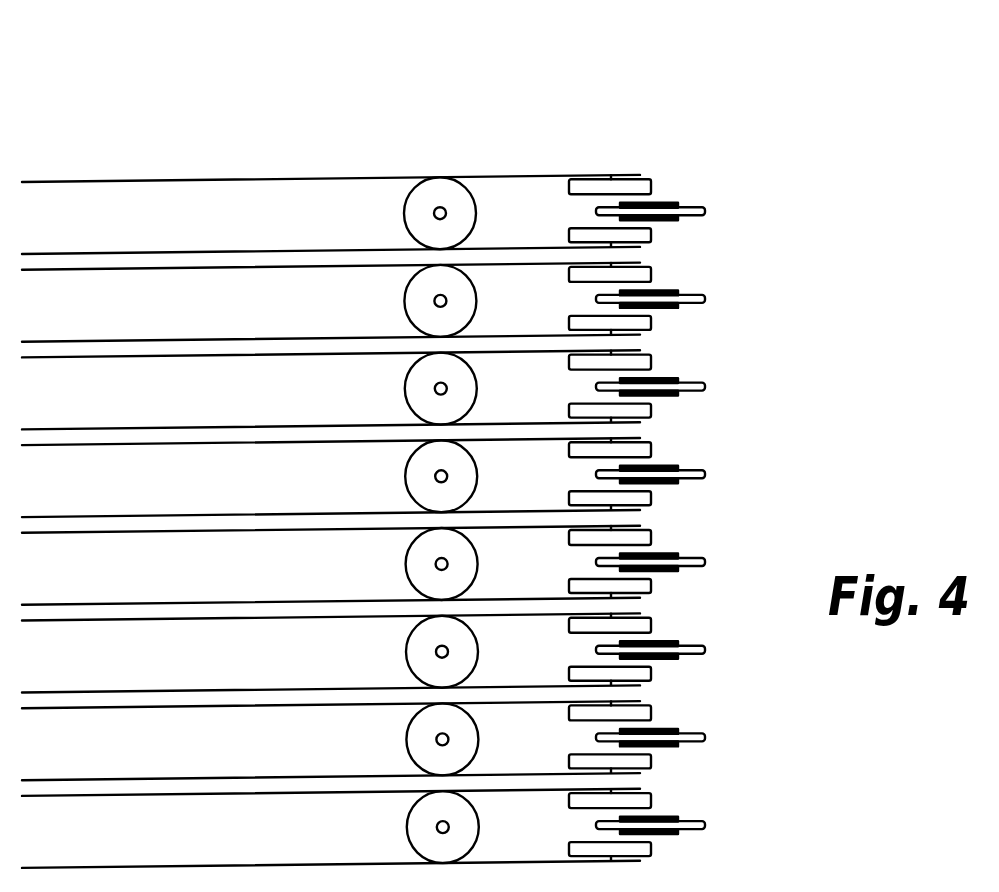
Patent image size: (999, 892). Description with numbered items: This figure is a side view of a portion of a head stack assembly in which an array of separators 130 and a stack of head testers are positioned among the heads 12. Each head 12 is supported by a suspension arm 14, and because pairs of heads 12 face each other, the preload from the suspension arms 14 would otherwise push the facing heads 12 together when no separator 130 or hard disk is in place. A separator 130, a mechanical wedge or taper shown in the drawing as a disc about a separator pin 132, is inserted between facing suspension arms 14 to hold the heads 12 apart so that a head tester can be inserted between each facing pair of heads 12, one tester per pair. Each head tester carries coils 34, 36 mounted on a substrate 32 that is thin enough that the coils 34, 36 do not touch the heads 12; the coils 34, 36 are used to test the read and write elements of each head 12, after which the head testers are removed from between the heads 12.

The head 12 is at (568, 234).
The suspension arm 14 is at (340, 176).
The substrate 32 is at (706, 211).
The coil 34 is at (679, 221).
The coil 36 is at (718, 524).
The separator 130 is at (473, 177).
The separator pin 132 is at (430, 205).